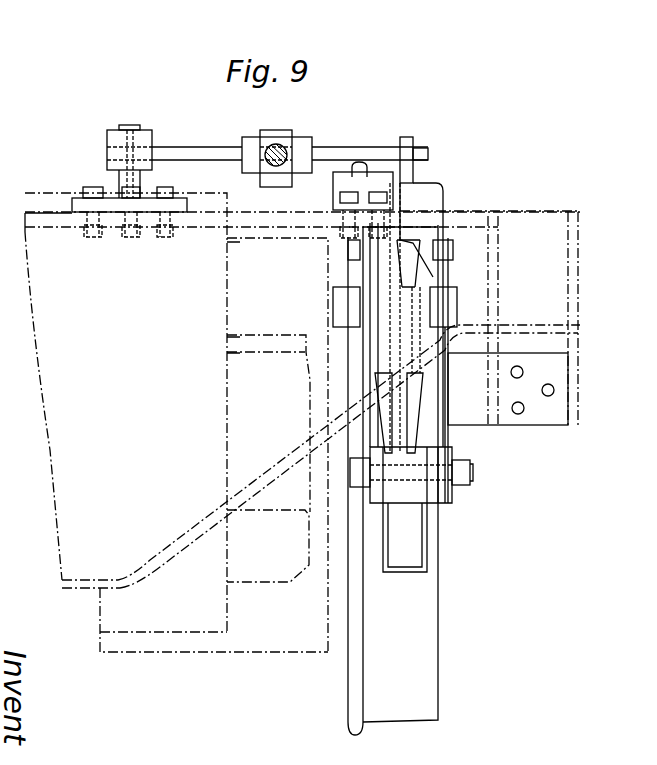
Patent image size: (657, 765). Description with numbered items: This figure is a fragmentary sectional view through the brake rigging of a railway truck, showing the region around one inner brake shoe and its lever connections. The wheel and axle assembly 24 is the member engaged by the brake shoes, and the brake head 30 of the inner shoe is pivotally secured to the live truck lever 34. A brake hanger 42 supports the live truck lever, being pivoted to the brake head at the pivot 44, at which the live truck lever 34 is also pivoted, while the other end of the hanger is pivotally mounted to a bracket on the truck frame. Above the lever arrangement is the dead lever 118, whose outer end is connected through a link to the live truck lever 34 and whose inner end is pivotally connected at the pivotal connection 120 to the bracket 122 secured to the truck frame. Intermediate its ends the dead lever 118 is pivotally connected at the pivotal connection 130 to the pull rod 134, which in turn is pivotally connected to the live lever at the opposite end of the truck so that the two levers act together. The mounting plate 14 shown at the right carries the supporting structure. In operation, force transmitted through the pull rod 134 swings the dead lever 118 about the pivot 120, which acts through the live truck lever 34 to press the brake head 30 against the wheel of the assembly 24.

The mounting plate 14 is at (551, 418).
The wheel and axle assembly 24 is at (438, 636).
The brake head 30 is at (415, 545).
The live truck lever 34 is at (410, 193).
The brake hanger 42 is at (448, 437).
The pivot 44 is at (468, 483).
The dead lever 118 is at (178, 149).
The pivotal connection 120 is at (130, 125).
The bracket 122 is at (112, 179).
The pivotal connection 130 is at (276, 130).
The pull rod 134 is at (295, 138).